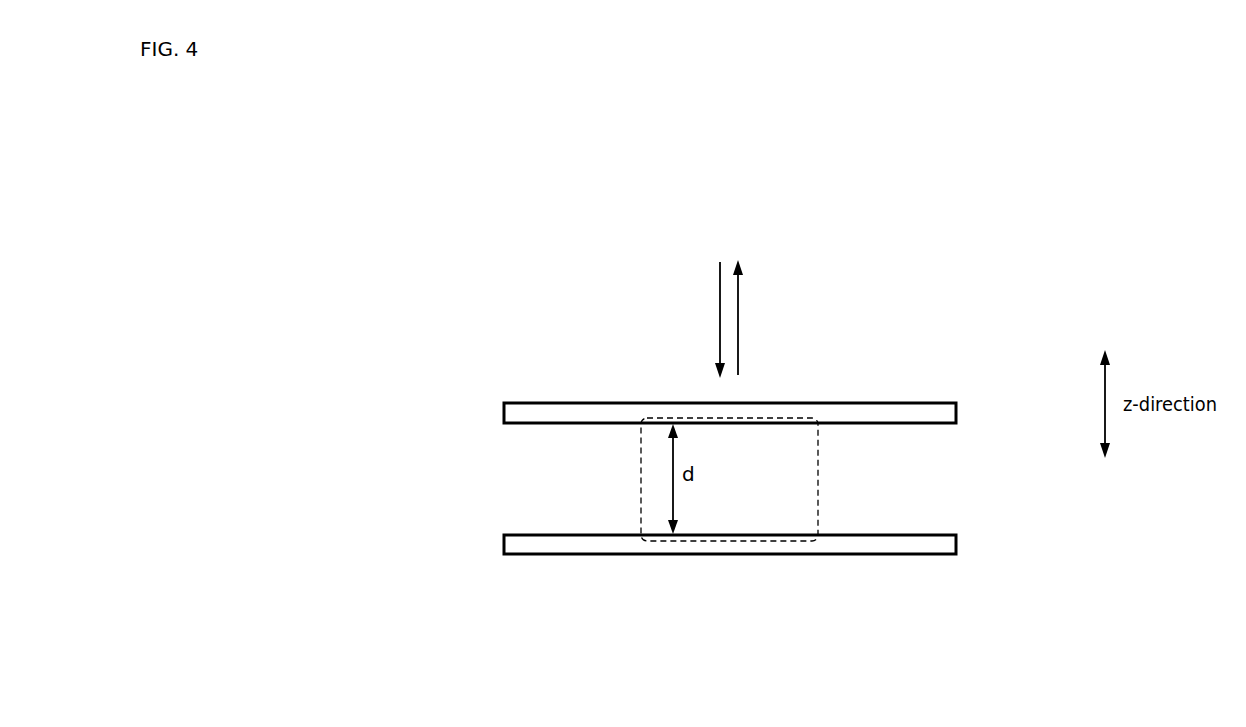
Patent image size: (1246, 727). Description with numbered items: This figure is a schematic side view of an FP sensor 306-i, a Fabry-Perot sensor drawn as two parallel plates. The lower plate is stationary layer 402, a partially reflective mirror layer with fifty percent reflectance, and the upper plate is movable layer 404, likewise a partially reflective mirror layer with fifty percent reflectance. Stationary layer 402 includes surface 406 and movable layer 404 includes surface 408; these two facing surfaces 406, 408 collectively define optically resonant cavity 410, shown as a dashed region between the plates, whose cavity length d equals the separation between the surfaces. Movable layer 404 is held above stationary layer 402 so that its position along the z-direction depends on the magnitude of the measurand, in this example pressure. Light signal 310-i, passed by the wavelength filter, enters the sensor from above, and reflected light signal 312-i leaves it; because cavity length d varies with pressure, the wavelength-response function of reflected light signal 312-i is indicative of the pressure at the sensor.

The FP sensor 306-i is at (380, 322).
The light signal 310-i is at (693, 320).
The reflected light signal 312-i is at (767, 317).
The stationary layer 402 is at (956, 545).
The movable layer 404 is at (956, 412).
The surface 406 is at (626, 534).
The surface 408 is at (626, 424).
The optically resonant cavity 410 is at (818, 481).